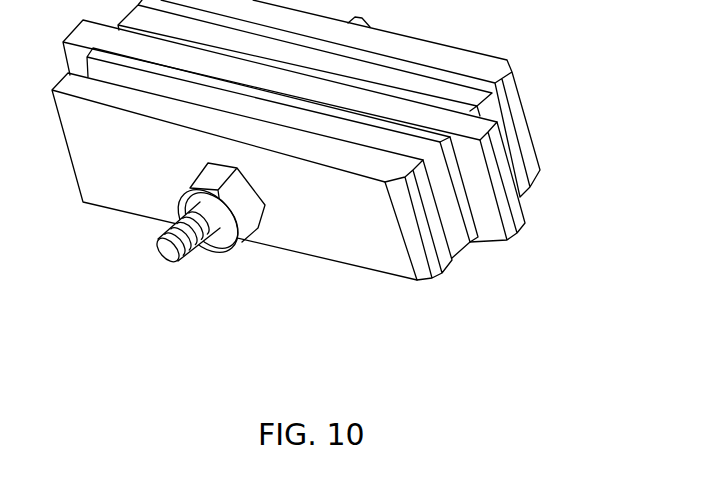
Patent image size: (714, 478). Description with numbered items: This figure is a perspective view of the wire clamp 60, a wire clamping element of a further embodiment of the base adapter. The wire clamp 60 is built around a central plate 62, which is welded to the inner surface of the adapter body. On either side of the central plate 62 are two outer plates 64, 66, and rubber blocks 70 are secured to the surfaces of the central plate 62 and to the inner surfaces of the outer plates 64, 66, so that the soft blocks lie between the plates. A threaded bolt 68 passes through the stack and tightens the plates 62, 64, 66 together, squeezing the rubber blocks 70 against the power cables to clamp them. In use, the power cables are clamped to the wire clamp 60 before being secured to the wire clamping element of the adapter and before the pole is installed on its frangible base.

The wire clamp 60 is at (223, 262).
The central plate 62 is at (514, 222).
The outer plate 64 is at (352, 258).
The outer plate 66 is at (503, 57).
The threaded bolt 68 is at (150, 255).
The rubber block 70 is at (467, 243).